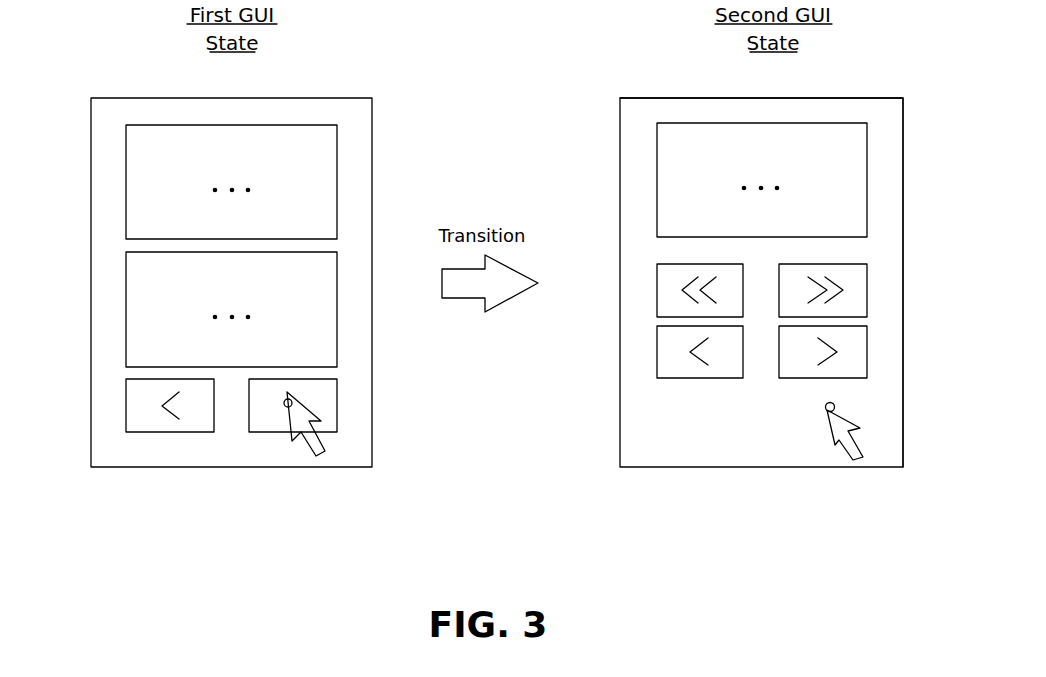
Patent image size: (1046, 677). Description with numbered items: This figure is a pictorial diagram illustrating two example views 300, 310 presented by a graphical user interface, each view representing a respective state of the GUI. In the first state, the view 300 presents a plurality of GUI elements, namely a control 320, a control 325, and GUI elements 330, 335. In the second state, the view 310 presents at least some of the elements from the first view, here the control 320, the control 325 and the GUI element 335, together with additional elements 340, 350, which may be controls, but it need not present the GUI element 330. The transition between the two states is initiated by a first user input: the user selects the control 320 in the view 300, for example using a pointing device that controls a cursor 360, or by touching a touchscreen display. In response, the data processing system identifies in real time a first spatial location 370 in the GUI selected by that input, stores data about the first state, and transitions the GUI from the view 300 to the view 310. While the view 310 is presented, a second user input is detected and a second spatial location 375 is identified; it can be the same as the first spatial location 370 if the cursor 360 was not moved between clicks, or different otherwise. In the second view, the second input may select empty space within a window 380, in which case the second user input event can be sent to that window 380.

The view 300 is at (310, 98).
The view 310 is at (847, 97).
The control 320 is at (327, 405).
The control 325 is at (135, 405).
The GUI element 330 is at (135, 298).
The GUI element 335 is at (135, 183).
The additional element 340 is at (860, 290).
The additional element 350 is at (672, 290).
The cursor 360 is at (300, 430).
The first spatial location 370 is at (286, 410).
The second spatial location 375 is at (826, 412).
The window 380 is at (890, 177).